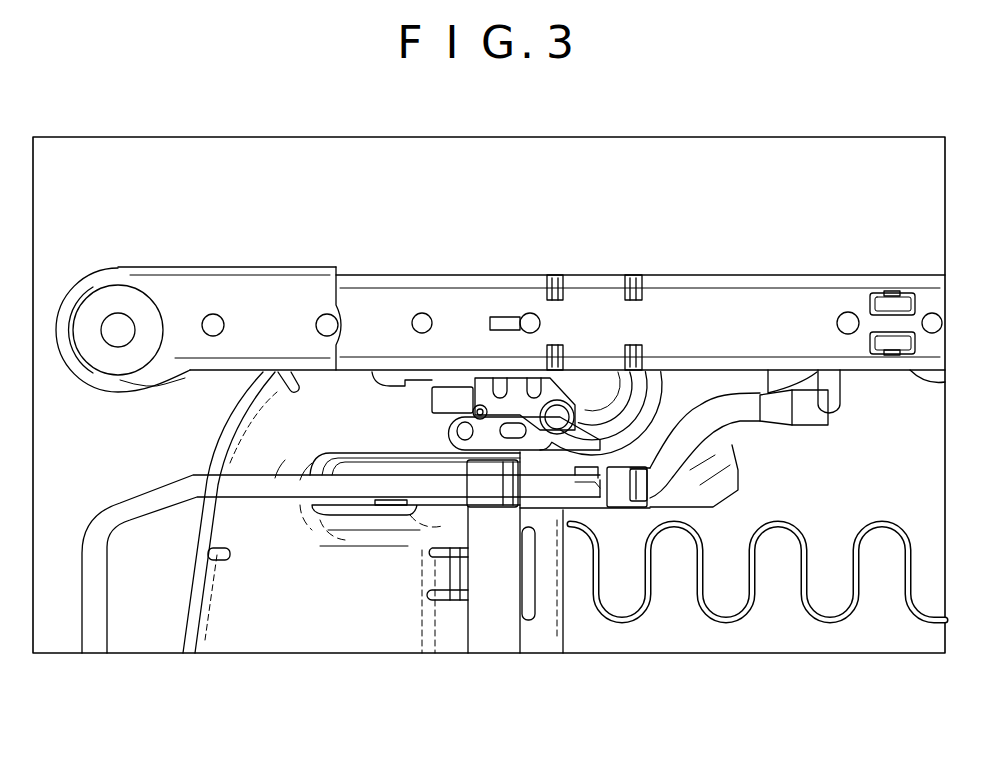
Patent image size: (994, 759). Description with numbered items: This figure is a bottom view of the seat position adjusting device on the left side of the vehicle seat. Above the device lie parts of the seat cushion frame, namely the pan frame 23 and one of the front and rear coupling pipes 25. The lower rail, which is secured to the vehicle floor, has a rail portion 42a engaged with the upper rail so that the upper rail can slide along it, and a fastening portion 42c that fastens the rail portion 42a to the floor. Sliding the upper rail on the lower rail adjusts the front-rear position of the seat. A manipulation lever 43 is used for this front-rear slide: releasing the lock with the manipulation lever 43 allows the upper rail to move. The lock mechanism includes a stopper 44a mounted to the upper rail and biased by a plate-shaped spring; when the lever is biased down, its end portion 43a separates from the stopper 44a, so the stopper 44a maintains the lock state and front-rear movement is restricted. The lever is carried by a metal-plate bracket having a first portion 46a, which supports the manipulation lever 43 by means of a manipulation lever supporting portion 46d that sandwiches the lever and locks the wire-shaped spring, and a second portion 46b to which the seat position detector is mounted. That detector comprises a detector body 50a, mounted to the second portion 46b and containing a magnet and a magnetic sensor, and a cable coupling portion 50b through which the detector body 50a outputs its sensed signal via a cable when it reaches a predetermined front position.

The pan frame 23 is at (320, 620).
The coupling pipe 25 is at (494, 633).
The rail portion 42a is at (590, 275).
The fastening portion 42c is at (250, 268).
The manipulation lever 43 is at (137, 490).
The end portion of the manipulation lever 43a is at (807, 413).
The stopper 44a is at (832, 400).
The first portion 46a is at (683, 400).
The second portion 46b is at (607, 393).
The manipulation lever supporting portion 46d is at (602, 490).
The detector body 50a is at (515, 392).
The cable coupling portion 50b is at (445, 398).